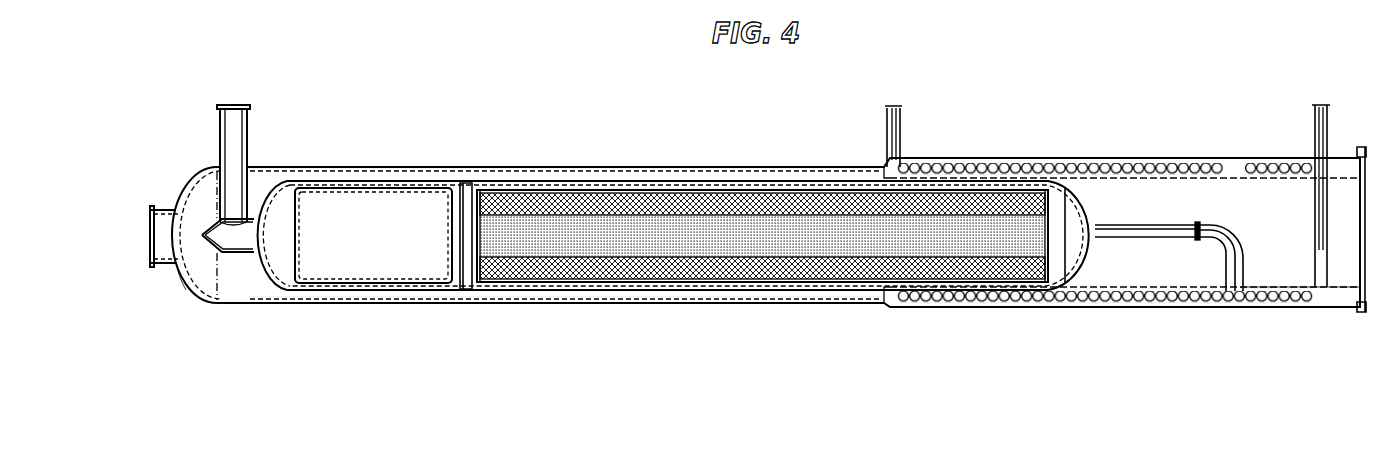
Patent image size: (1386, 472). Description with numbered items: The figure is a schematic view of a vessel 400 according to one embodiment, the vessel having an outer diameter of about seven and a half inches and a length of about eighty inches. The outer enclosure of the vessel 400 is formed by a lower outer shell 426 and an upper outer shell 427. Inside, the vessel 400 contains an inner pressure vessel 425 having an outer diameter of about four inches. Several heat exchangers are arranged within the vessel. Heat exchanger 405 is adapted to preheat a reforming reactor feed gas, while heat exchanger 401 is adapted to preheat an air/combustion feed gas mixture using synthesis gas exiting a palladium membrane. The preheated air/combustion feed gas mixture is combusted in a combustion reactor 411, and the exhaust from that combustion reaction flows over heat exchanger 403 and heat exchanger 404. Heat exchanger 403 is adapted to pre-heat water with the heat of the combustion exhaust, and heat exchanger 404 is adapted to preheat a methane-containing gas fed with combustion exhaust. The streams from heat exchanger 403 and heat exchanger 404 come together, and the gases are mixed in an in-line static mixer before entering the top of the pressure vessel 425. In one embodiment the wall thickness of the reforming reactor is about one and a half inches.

The vessel 400 is at (604, 127).
The heat exchanger 401 is at (328, 167).
The heat exchanger 403 is at (1137, 296).
The heat exchanger 404 is at (1278, 296).
The heat exchanger 405 is at (967, 284).
The combustion reactor 411 is at (763, 295).
The inner pressure vessel 425 is at (272, 289).
The lower outer shell 426 is at (185, 288).
The upper outer shell 427 is at (1100, 160).